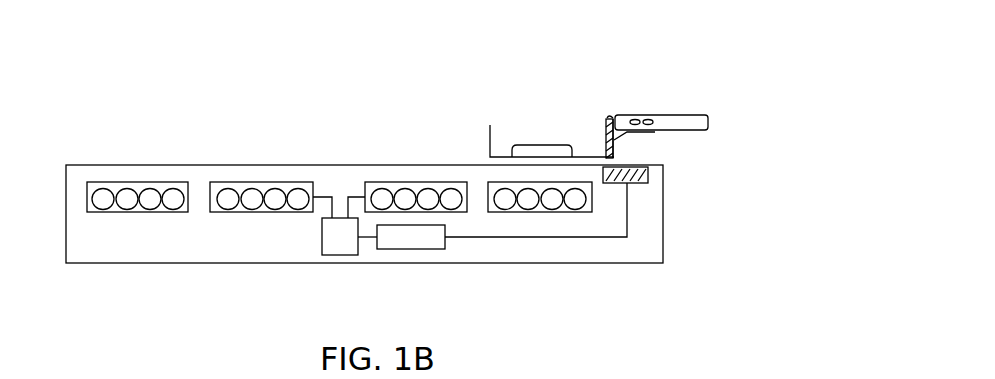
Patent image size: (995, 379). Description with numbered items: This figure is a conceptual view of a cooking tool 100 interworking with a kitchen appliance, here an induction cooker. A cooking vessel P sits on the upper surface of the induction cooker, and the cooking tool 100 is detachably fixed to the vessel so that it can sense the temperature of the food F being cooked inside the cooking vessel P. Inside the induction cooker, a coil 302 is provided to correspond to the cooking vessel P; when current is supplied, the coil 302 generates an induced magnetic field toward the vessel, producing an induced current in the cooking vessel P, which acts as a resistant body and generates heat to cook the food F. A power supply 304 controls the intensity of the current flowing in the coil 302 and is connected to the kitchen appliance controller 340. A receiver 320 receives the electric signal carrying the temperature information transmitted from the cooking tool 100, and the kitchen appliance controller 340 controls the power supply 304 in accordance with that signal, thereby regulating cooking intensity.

The cooking tool 100 is at (670, 98).
The coil 302 is at (220, 212).
The power supply 304 is at (342, 255).
The receiver 320 is at (643, 177).
The kitchen appliance controller 340 is at (410, 249).
The cooking vessel P is at (490, 137).
The food F is at (540, 150).